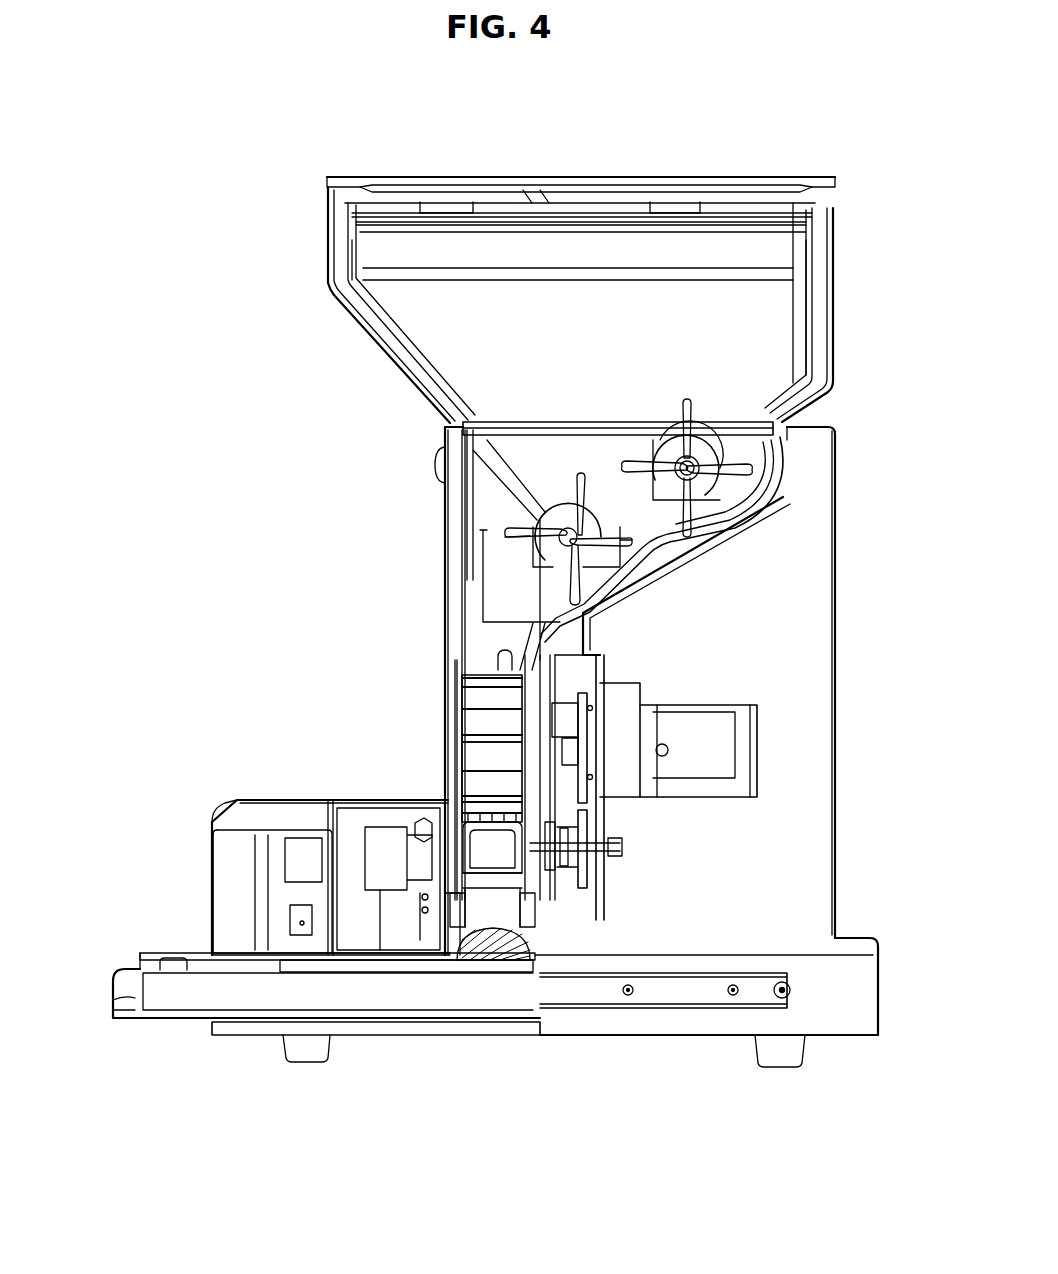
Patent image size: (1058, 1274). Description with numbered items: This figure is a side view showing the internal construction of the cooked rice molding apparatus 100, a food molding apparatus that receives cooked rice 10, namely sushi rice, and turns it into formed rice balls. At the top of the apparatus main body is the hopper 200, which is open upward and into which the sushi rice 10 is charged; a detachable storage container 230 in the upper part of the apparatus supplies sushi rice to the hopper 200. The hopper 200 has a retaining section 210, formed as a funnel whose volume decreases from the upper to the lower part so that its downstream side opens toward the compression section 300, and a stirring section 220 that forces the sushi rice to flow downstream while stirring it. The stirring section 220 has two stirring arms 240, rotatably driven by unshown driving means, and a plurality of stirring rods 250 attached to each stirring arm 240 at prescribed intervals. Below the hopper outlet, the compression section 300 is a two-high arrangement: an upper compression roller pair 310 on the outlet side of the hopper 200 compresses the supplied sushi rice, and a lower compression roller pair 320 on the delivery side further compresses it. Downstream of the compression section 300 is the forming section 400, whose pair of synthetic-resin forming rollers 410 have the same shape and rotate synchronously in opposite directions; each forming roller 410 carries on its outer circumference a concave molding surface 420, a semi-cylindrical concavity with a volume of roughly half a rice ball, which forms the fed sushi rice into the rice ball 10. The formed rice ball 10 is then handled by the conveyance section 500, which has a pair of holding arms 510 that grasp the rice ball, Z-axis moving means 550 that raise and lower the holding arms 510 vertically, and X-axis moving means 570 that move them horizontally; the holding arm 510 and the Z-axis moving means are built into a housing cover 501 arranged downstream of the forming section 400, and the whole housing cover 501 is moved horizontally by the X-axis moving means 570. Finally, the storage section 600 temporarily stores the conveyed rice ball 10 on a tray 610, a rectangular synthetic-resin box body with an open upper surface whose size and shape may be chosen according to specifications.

The cooked rice molding apparatus 100 is at (273, 497).
The hopper 200 is at (403, 487).
The retaining section 210 is at (763, 490).
The stirring section 220 is at (500, 535).
The storage container 230 is at (333, 263).
The stirring arm 240 is at (577, 530).
The stirring rod 250 is at (647, 453).
The compression section 300 is at (400, 723).
The upper compression roller pair 310 is at (448, 702).
The lower compression roller pair 320 is at (448, 767).
The forming section 400 is at (433, 795).
The forming roller 410 is at (532, 838).
The concave molding surface 420 is at (505, 850).
The conveyance section 500 is at (272, 793).
The housing cover 501 is at (403, 960).
The holding arm 510 is at (545, 907).
The Z-axis moving means 550 is at (378, 967).
The X-axis moving means 570 is at (198, 845).
The storage section 600 is at (187, 1043).
The tray 610 is at (133, 990).
The cooked rice 10 is at (488, 953).